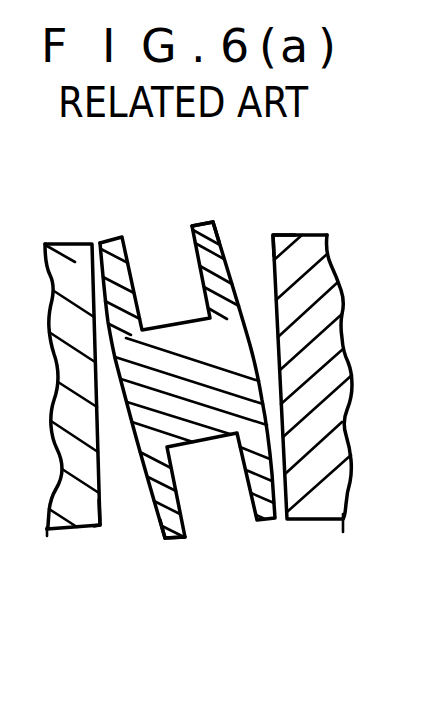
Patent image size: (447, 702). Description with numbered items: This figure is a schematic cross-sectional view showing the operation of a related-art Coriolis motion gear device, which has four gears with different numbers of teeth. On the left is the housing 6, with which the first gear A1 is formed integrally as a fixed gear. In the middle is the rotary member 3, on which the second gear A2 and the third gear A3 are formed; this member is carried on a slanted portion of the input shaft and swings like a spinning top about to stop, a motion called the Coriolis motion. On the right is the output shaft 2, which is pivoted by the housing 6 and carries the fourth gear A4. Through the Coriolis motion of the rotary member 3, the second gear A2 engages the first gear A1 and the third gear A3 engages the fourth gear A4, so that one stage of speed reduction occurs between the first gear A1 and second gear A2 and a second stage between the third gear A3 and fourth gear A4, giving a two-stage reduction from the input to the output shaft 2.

The output shaft 2 is at (320, 503).
The rotary member 3 is at (178, 315).
The housing 6 is at (75, 260).
The first gear A1 is at (104, 514).
The second gear A2 is at (164, 531).
The third gear A3 is at (216, 226).
The fourth gear A4 is at (268, 240).